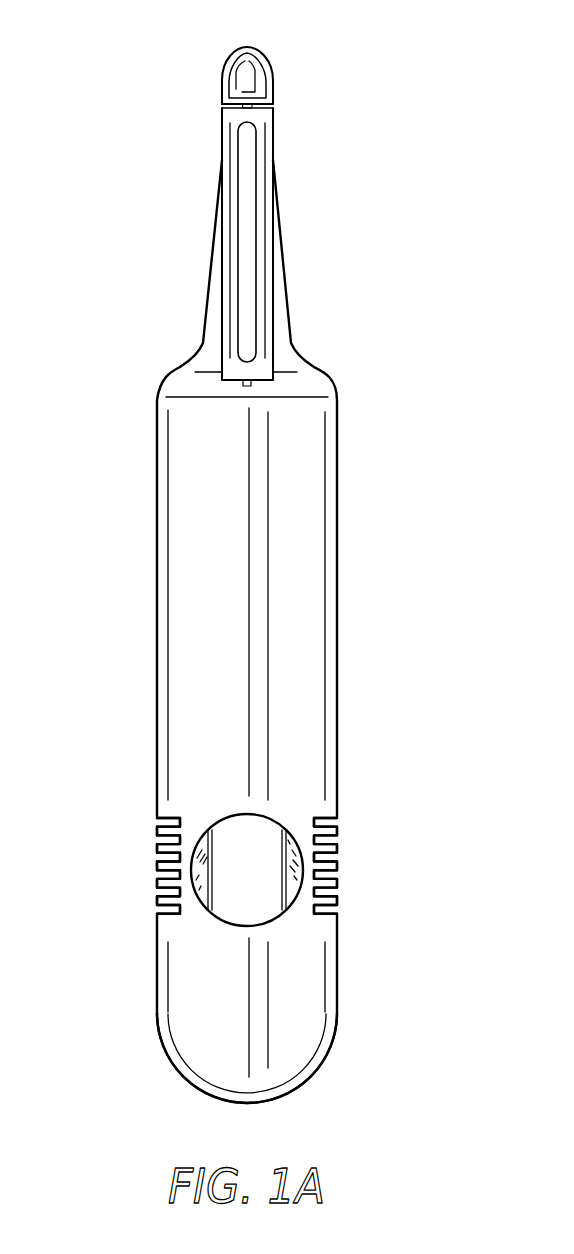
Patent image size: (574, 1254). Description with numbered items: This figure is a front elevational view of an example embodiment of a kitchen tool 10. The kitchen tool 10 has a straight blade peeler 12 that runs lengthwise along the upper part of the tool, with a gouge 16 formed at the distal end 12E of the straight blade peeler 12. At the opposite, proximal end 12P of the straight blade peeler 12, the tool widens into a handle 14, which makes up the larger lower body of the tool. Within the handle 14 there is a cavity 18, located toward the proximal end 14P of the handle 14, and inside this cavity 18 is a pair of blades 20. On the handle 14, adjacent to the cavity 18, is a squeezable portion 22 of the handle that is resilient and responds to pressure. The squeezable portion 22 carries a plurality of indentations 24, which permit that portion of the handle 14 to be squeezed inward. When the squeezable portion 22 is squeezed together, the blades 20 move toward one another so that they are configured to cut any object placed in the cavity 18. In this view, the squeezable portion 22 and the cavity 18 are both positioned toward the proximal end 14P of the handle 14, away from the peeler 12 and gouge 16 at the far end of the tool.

The kitchen tool 10 is at (247, 558).
The straight blade peeler 12 is at (270, 231).
The distal end 12E is at (222, 103).
The proximal end 12P is at (293, 383).
The handle 14 is at (302, 591).
The proximal end of the handle 14P is at (320, 1072).
The gouge 16 is at (262, 63).
The cavity 18 is at (246, 907).
The blades 20 is at (295, 860).
The squeezable portion 22 is at (247, 869).
The indentations 24 is at (333, 820).